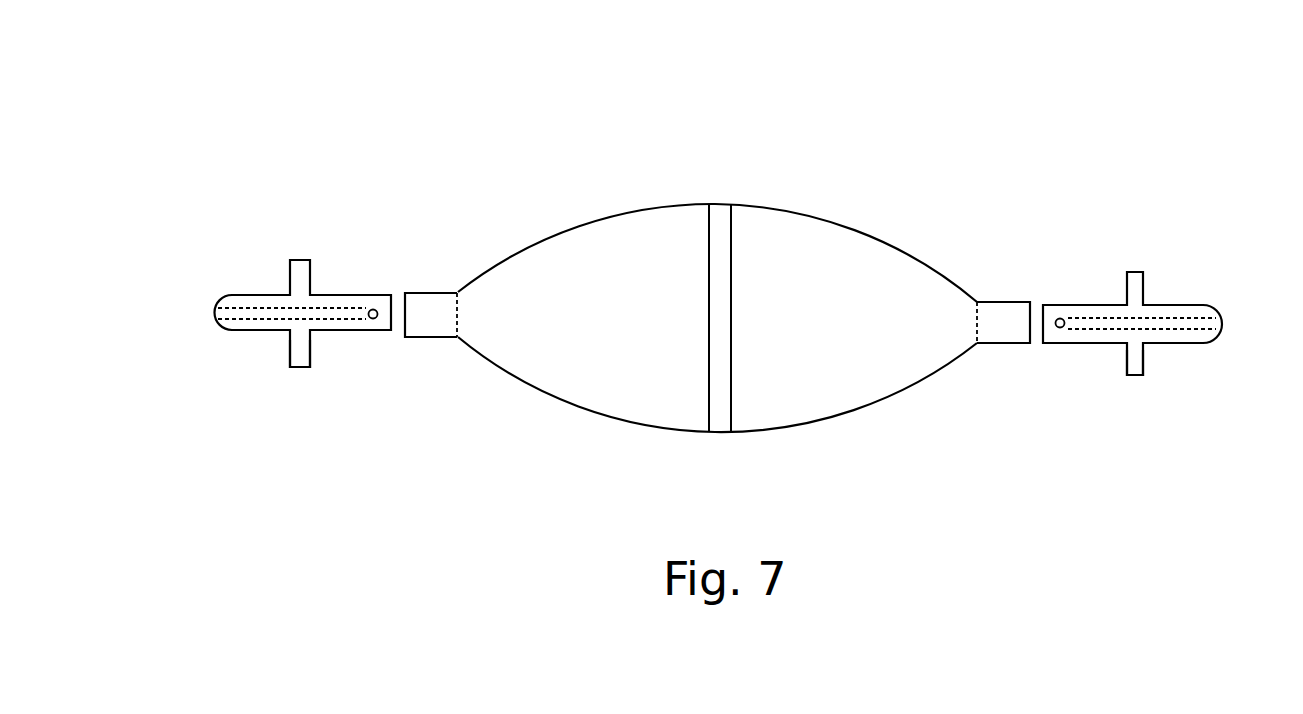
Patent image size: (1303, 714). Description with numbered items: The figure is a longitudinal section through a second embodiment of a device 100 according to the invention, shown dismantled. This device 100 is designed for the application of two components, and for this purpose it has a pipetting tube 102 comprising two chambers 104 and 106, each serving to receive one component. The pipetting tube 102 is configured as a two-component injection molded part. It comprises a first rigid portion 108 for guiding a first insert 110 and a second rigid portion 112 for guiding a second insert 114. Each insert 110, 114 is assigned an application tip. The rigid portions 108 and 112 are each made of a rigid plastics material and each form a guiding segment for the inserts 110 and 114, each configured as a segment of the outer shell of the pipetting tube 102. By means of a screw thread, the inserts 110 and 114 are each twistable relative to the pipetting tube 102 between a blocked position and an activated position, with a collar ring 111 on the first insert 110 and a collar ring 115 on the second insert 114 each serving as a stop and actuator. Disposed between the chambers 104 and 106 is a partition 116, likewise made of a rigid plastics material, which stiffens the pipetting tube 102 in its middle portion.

The device 100 is at (173, 133).
The pipetting tube 102 is at (893, 240).
The chamber 104 is at (843, 373).
The chamber 106 is at (562, 372).
The first rigid portion 108 is at (1012, 302).
The first insert 110 is at (1190, 305).
The collar ring 111 is at (1135, 362).
The second rigid portion 112 is at (419, 293).
The second insert 114 is at (242, 297).
The collar ring 115 is at (300, 353).
The partition 116 is at (723, 232).